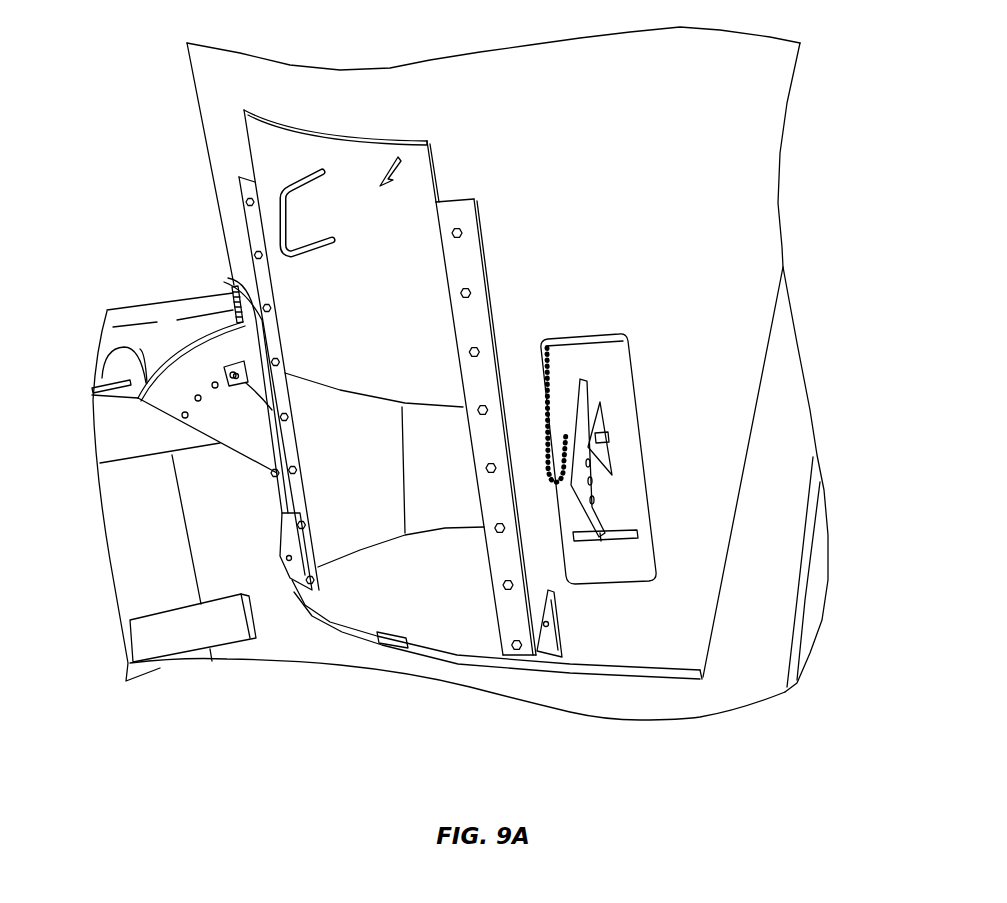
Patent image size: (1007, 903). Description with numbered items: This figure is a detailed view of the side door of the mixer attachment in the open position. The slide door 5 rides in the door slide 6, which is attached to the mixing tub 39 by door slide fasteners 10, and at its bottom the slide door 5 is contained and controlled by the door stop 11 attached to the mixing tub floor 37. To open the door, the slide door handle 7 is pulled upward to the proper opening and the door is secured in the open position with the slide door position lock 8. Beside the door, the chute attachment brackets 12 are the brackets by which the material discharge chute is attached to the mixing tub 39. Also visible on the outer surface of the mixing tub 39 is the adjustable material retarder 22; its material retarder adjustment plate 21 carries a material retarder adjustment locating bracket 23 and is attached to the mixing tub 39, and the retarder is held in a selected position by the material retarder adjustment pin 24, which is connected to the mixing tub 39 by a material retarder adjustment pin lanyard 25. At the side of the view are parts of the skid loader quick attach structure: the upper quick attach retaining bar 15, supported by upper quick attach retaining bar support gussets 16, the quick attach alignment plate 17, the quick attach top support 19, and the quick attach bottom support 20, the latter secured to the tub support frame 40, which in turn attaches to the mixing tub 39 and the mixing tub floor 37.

The slide door 5 is at (262, 132).
The door slide 6 is at (466, 260).
The slide door handle 7 is at (293, 227).
The slide door position lock 8 is at (382, 182).
The door slide fasteners 10 is at (467, 351).
The door stop 11 is at (390, 643).
The chute attachment brackets 12 is at (549, 632).
The upper quick attach retaining bar 15 is at (95, 388).
The upper quick attach retaining bar support gussets 16 is at (116, 360).
The quick attach alignment plate 17 is at (123, 522).
The quick attach top support 19 is at (113, 440).
The quick attach bottom support 20 is at (163, 643).
The material retarder adjustment plate 21 is at (604, 364).
The adjustable material retarder 22 is at (251, 440).
The material retarder adjustment locating bracket 23 is at (603, 416).
The material retarder adjustment pin 24 is at (609, 436).
The material retarder adjustment pin lanyard 25 is at (540, 427).
The mixing tub floor 37 is at (654, 677).
The mixing tub 39 is at (722, 203).
The tub support frame 40 is at (300, 633).